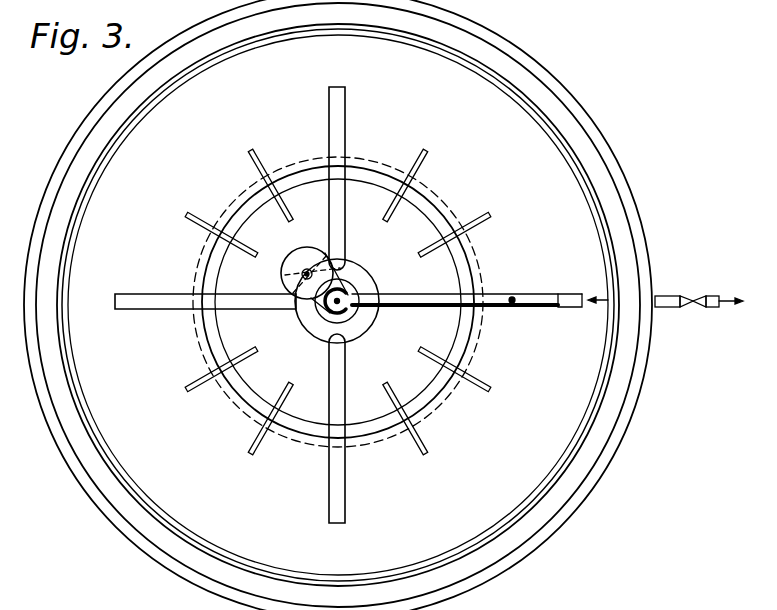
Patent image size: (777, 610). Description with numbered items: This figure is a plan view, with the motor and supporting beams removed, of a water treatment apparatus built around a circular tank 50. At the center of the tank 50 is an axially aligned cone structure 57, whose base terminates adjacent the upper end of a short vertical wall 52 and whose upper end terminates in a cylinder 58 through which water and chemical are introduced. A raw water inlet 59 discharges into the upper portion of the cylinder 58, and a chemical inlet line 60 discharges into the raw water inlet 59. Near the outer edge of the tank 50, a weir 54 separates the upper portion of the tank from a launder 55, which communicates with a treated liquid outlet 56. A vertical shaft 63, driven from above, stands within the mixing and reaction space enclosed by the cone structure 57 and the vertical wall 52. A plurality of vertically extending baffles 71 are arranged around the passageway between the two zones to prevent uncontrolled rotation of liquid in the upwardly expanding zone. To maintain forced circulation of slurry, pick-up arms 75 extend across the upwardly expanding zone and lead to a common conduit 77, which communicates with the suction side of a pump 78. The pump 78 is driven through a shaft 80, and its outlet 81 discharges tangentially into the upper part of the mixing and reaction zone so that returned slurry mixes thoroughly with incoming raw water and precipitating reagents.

The tank 50 is at (552, 128).
The short vertical wall 52 is at (198, 357).
The weir 54 is at (583, 175).
The launder 55 is at (622, 210).
The treated liquid outlet 56 is at (662, 295).
The cone structure 57 is at (308, 425).
The cylinder 58 is at (355, 287).
The raw water inlet 59 is at (572, 306).
The chemical inlet line 60 is at (516, 295).
The vertical shaft 63 is at (325, 318).
The vertically extending baffles 71 is at (245, 167).
The pick-up arms 75 is at (347, 103).
The common conduit 77 is at (365, 330).
The pump 78 is at (299, 258).
The shaft 80 is at (303, 274).
The outlet of the pump 81 is at (357, 312).